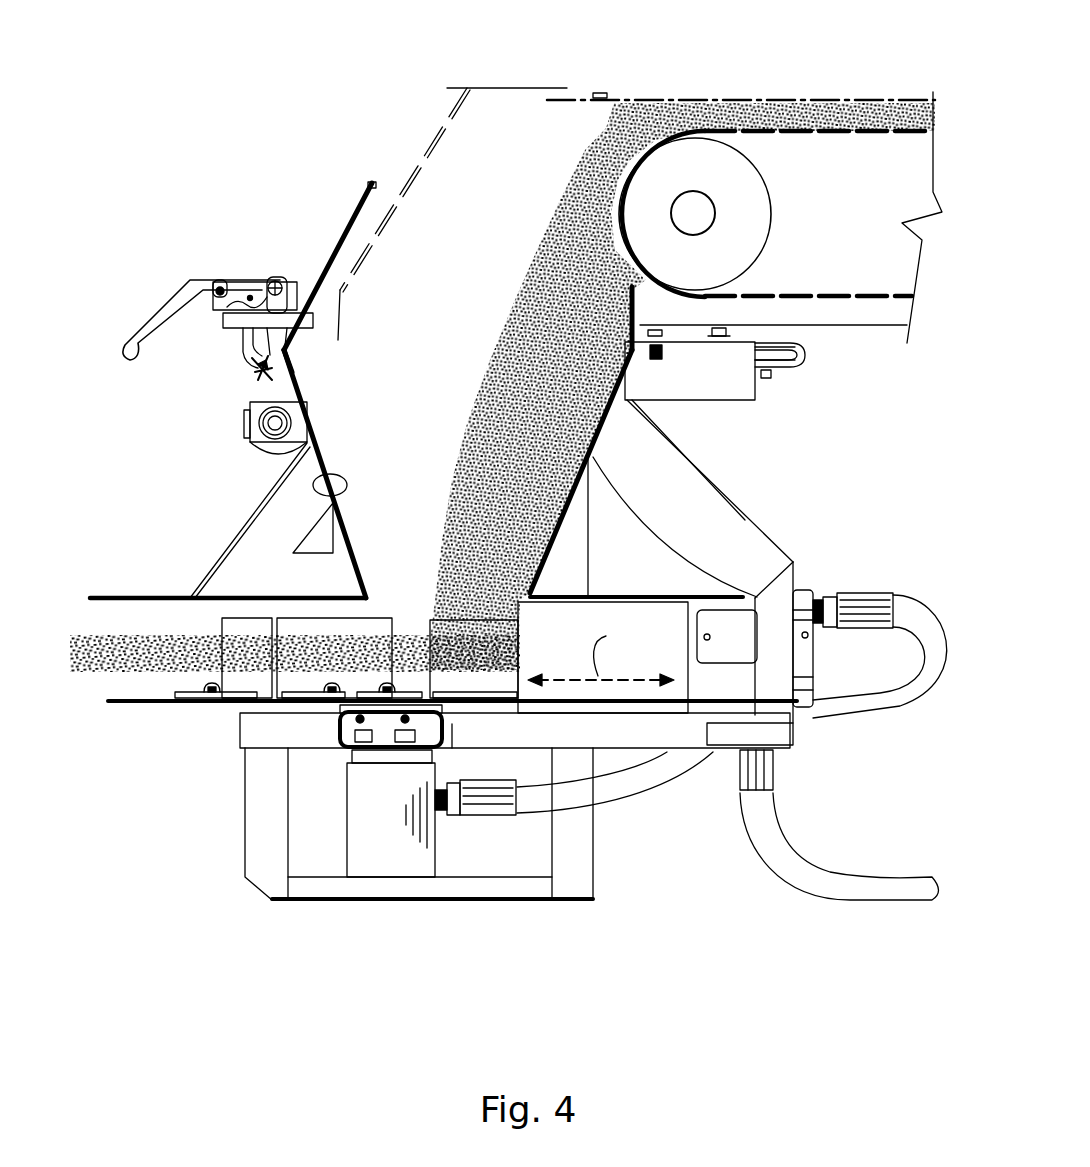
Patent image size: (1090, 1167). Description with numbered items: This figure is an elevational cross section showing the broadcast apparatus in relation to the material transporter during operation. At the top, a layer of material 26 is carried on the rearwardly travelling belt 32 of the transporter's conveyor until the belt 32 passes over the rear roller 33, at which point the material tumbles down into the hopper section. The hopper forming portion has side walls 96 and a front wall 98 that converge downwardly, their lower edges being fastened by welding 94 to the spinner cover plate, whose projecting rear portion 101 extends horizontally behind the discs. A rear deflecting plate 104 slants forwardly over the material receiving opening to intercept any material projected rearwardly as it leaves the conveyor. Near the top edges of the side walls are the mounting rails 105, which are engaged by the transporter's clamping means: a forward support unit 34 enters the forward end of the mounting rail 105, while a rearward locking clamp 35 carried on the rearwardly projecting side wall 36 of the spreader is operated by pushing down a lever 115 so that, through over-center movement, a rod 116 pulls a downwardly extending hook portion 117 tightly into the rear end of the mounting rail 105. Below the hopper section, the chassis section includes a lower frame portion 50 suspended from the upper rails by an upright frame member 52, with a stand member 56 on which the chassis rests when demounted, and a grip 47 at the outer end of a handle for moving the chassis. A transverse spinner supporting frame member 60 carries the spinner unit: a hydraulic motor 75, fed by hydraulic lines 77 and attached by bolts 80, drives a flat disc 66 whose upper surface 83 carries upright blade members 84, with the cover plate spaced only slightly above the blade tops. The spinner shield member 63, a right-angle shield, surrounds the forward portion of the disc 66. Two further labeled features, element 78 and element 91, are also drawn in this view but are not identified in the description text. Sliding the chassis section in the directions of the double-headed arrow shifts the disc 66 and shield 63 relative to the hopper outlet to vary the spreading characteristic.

The material 26 is at (592, 130).
The belt 32 is at (822, 298).
The rear roller 33 is at (770, 183).
The forward support unit 34 is at (797, 365).
The locking clamp 35 is at (243, 255).
The side wall 36 is at (478, 183).
The grip 47 is at (250, 452).
The lower frame portion 50 is at (620, 758).
The upright frame member 52 is at (803, 520).
The stand member 56 is at (593, 867).
The spinner supporting frame member 60 is at (337, 733).
The spinner shield member 63 is at (653, 697).
The disc 66 is at (223, 710).
The hydraulic motor 75 is at (370, 862).
The hydraulic line 77 is at (853, 893).
The hose 78 is at (667, 767).
The bolt 80 is at (452, 724).
The upper surface 83 is at (117, 683).
The blade member 84 is at (233, 673).
The opening 91 is at (313, 492).
The welding 94 is at (357, 593).
The side wall 96 is at (337, 375).
The front wall 98 is at (733, 517).
The projecting rear portion 101 is at (122, 597).
The rear deflecting plate 104 is at (360, 214).
The mounting rail 105 is at (718, 378).
The lever 115 is at (150, 318).
The rod 116 is at (300, 281).
The hook portion 117 is at (256, 367).